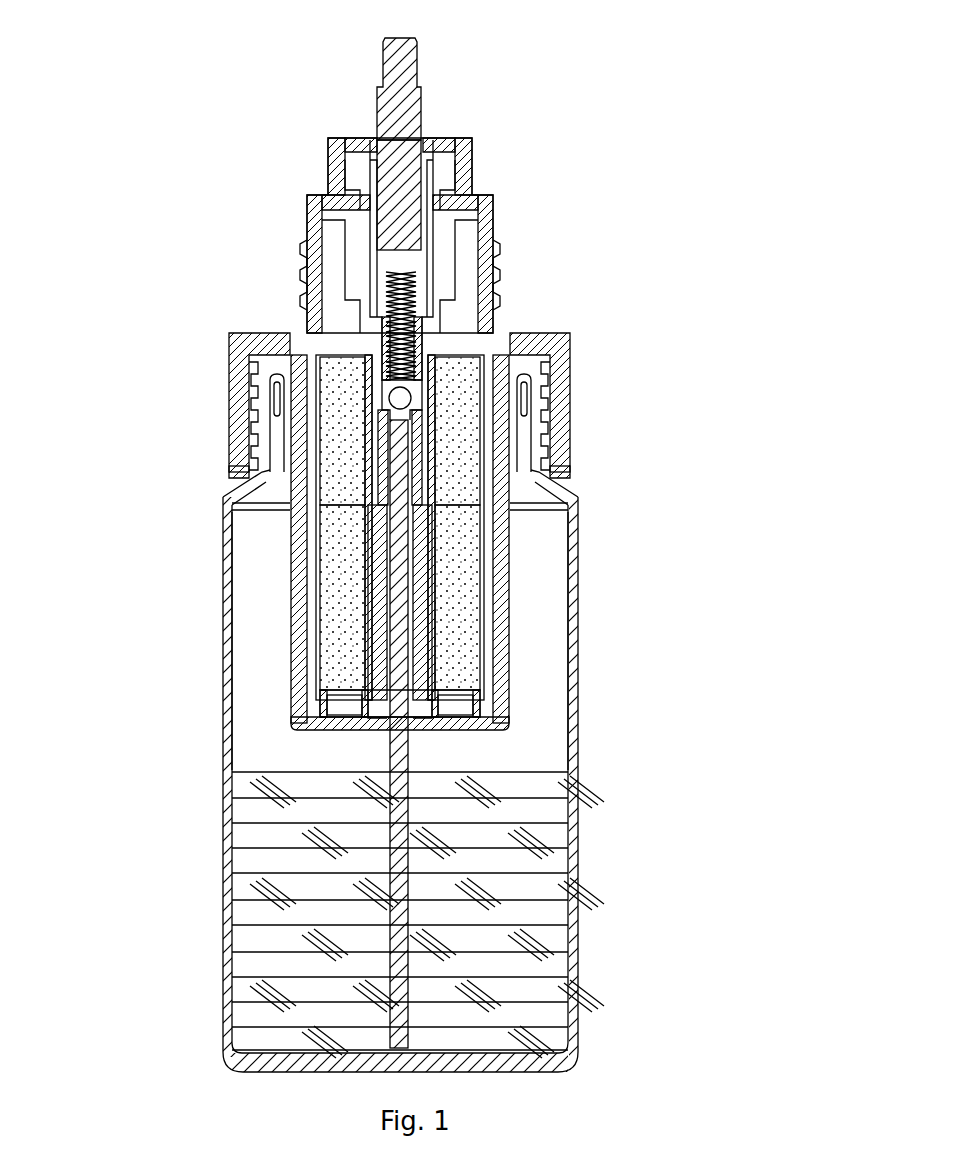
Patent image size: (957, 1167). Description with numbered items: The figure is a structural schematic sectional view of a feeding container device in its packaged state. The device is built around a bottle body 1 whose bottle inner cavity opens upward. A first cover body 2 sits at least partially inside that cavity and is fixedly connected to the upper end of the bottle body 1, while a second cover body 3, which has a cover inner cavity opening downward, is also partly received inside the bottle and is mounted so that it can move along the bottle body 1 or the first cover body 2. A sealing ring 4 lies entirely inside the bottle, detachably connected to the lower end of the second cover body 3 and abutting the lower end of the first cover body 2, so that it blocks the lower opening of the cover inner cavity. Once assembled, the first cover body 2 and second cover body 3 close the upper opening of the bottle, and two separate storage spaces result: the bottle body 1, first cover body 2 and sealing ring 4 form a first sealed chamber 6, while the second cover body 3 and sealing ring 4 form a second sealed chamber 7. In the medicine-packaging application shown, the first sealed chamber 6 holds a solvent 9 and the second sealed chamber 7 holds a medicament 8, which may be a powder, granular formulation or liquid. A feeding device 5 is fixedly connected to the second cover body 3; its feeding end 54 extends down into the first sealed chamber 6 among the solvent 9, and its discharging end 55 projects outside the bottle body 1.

The bottle body 1 is at (575, 845).
The first cover body 2 is at (497, 528).
The second cover body 3 is at (490, 612).
The sealing ring 4 is at (487, 713).
The feeding device 5 is at (415, 290).
The first sealed chamber 6 is at (265, 738).
The second sealed chamber 7 is at (318, 580).
The medicament 8 is at (335, 463).
The solvent 9 is at (265, 893).
The feeding end 54 is at (408, 1047).
The discharging end 55 is at (402, 40).